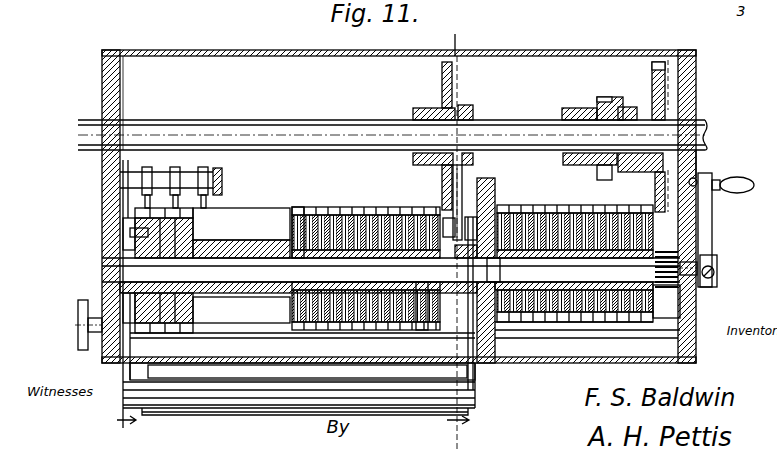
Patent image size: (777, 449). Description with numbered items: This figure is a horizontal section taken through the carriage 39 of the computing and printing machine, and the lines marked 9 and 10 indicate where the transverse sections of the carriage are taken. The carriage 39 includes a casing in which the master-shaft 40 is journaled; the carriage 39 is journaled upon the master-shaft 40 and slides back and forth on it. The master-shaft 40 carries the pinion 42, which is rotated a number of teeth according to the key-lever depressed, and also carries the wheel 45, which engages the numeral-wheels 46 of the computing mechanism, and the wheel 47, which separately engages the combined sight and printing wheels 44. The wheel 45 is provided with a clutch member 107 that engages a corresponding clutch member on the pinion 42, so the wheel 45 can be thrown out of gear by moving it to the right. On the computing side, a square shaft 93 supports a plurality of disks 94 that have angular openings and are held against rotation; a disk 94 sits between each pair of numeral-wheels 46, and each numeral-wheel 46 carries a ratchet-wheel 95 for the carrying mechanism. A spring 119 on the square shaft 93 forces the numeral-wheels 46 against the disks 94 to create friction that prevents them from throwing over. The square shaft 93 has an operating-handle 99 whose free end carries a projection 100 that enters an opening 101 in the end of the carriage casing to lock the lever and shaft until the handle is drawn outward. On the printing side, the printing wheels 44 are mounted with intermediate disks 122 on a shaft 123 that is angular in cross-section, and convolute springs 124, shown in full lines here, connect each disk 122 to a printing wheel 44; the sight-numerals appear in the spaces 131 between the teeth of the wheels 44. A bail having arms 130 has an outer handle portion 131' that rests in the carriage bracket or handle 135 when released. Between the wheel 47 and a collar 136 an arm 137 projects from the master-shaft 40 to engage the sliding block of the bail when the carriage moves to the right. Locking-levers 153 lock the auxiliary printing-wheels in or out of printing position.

The section line 9 9 is at (126, 239).
The section line 10 10 is at (457, 232).
The carriage 39 is at (399, 191).
The master-shaft 40 is at (350, 125).
The pinion 42 is at (602, 99).
The combined sight and printing wheels 44 is at (400, 210).
The wheel 45 is at (660, 62).
The numeral-wheels of the computing mechanism 46 is at (574, 251).
The wheel 47 is at (453, 85).
The square shaft 93 is at (700, 290).
The disks 94 is at (505, 330).
The ratchet-wheel 95 is at (666, 301).
The operating-handle 99 is at (712, 218).
The projection 100 is at (702, 181).
The opening 101 is at (717, 150).
The clutch member 107 is at (630, 106).
The spring 119 is at (680, 252).
The disk 122 is at (290, 303).
The shaft 123 is at (226, 268).
The convolute springs 124 is at (292, 222).
The bail arms 130 is at (137, 350).
The spaces 131 is at (302, 356).
The handle portion of bail 131' is at (299, 398).
The carriage bracket or handle 135 is at (243, 413).
The collar 136 is at (474, 112).
The arm 137 is at (463, 107).
The locking-levers 153 is at (203, 167).